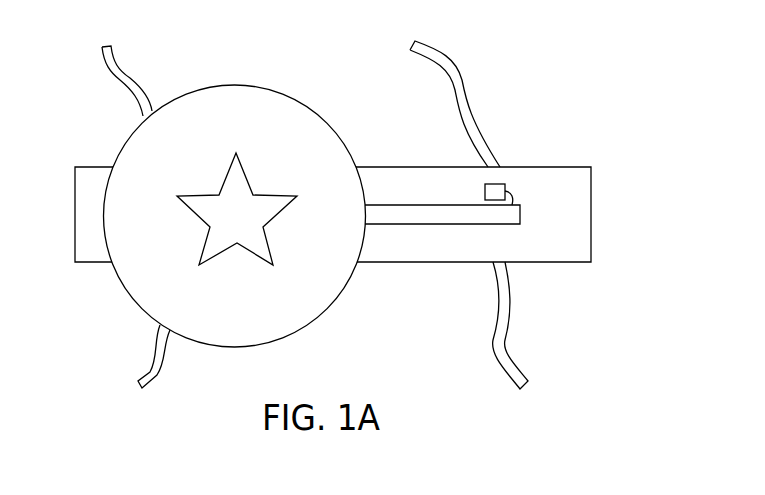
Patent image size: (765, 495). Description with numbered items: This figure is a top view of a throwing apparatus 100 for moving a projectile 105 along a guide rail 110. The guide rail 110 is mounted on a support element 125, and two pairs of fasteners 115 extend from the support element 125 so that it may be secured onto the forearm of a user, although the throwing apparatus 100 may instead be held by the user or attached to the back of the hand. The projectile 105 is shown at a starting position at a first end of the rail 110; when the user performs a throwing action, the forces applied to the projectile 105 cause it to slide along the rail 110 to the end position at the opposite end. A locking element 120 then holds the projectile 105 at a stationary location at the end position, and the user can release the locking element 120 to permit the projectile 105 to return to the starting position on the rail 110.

The throwing apparatus 100 is at (578, 32).
The projectile 105 is at (238, 85).
The guide rail 110 is at (385, 205).
The fasteners 115 is at (468, 95).
The locking element 120 is at (485, 191).
The support element 125 is at (399, 263).